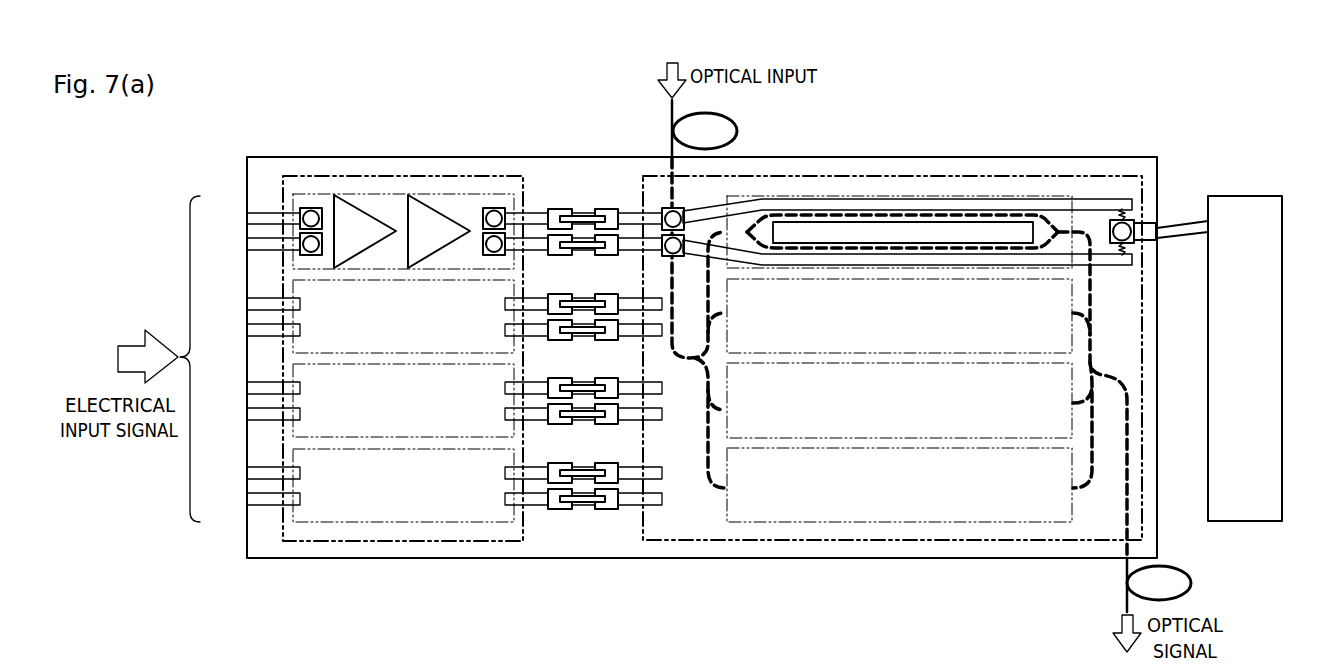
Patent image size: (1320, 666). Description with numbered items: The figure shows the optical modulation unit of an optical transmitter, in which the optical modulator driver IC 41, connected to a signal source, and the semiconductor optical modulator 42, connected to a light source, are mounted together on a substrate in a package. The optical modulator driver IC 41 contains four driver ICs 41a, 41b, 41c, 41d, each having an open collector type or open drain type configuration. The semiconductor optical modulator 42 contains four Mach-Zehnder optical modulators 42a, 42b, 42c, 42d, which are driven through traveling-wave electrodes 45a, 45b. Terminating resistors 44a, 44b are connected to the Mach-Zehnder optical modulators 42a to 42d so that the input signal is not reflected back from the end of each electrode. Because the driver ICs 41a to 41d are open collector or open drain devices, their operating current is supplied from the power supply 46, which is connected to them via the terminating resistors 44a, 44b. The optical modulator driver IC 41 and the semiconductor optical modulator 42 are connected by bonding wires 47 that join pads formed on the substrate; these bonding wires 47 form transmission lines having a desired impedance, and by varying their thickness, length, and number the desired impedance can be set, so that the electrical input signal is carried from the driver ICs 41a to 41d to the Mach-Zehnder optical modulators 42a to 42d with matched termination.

The optical modulator driver IC 41 is at (403, 321).
The driver IC 41a is at (293, 196).
The driver IC 41b is at (293, 281).
The driver IC 41c is at (293, 365).
The driver IC 41d is at (293, 450).
The semiconductor optical modulator 42 is at (897, 176).
The Mach-Zehnder optical modulator 42a is at (1065, 196).
The Mach-Zehnder optical modulator 42b is at (1072, 345).
The Mach-Zehnder optical modulator 42c is at (1072, 423).
The Mach-Zehnder optical modulator 42d is at (1072, 508).
The terminating resistor 44a is at (1130, 221).
The terminating resistor 44b is at (1127, 245).
The traveling-wave electrode 45a is at (1124, 211).
The traveling-wave electrode 45b is at (1122, 266).
The power supply 46 is at (1243, 196).
The bonding wire 47 is at (584, 216).